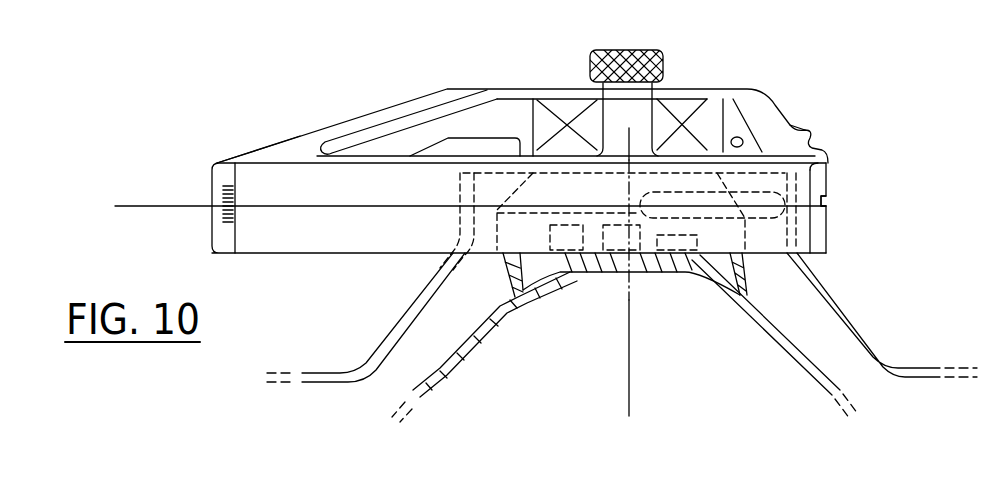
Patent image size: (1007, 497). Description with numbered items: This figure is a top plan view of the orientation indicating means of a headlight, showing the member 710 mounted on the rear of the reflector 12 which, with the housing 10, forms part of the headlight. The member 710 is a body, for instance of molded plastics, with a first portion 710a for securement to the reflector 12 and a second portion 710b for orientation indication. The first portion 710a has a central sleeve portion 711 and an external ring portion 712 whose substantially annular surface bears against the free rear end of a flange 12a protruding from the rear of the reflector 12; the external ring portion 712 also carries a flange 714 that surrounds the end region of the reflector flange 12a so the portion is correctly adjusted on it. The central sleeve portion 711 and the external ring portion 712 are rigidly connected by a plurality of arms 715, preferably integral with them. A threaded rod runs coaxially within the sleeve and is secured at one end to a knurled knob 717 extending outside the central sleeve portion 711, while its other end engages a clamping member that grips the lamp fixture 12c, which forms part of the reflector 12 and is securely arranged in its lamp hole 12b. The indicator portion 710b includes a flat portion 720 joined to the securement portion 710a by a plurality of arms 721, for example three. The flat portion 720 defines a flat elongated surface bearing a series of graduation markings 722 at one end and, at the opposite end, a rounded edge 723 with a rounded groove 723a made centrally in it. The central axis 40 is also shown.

The housing 10 is at (850, 322).
The reflector 12 is at (780, 347).
The flange 12a is at (503, 278).
The lamp hole 12b is at (660, 277).
The lamp fixture 12c is at (592, 277).
The central axis 40 is at (629, 393).
The member 710 is at (331, 100).
The first portion 710a is at (563, 130).
The second portion 710b is at (250, 147).
The central sleeve portion 711 is at (662, 125).
The external ring portion 712 is at (770, 258).
The flange 714 is at (470, 258).
The arms 715 is at (590, 128).
The knurled knob 717 is at (643, 50).
The flat portion 720 is at (362, 175).
The arms 721 is at (430, 100).
The graduation markings 722 is at (222, 180).
The rounded edge 723 is at (813, 177).
The rounded groove 723a is at (825, 208).